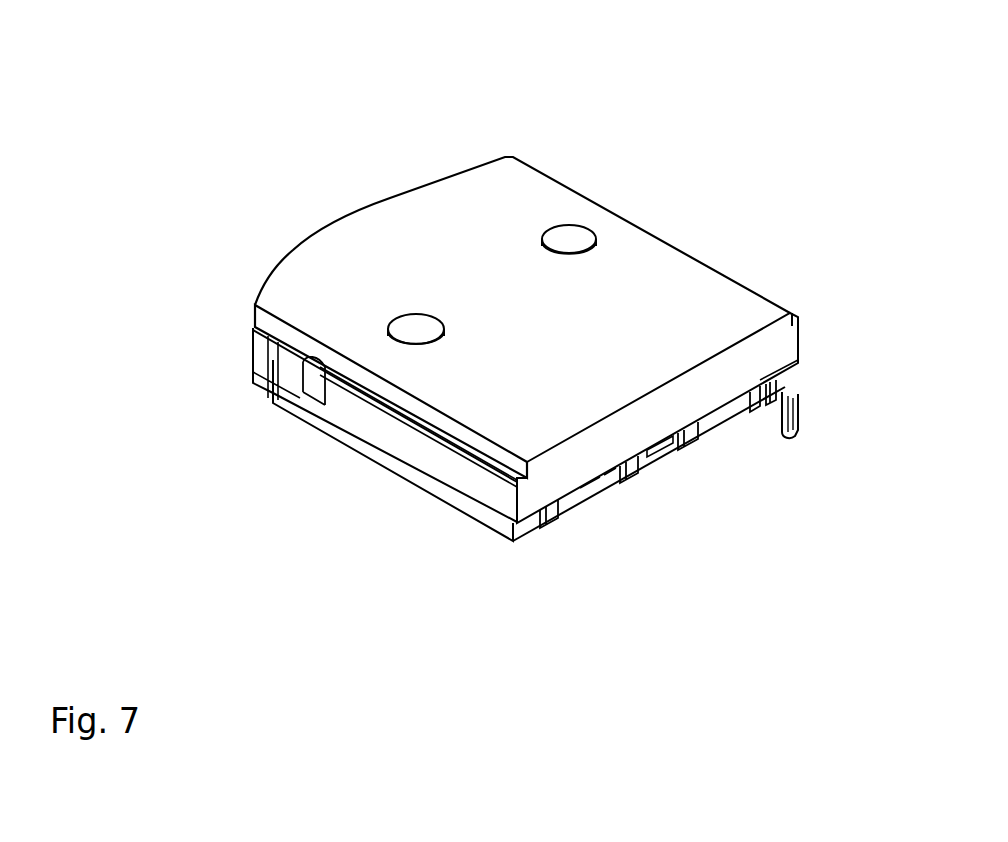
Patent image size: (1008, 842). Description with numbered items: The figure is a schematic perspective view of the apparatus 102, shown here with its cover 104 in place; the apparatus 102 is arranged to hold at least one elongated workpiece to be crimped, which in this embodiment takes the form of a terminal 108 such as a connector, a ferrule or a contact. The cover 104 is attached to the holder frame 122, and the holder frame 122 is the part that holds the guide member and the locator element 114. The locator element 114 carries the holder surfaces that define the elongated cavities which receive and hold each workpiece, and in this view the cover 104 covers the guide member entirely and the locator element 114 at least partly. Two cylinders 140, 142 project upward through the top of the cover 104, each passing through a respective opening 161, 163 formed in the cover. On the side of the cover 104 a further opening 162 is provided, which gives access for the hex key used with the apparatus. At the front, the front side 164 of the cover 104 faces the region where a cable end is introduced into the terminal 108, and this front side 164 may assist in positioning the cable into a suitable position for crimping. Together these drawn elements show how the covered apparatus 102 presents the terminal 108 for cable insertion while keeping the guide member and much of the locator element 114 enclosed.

The apparatus 102 is at (425, 126).
The cover 104 is at (663, 257).
The terminal 108 is at (800, 410).
The locator element 114 is at (603, 488).
The holder frame 122 is at (470, 508).
The cylinder 140 is at (413, 326).
The cylinder 142 is at (572, 241).
The opening 161 is at (392, 346).
The opening 162 is at (315, 394).
The opening 163 is at (598, 256).
The front side 164 is at (553, 475).